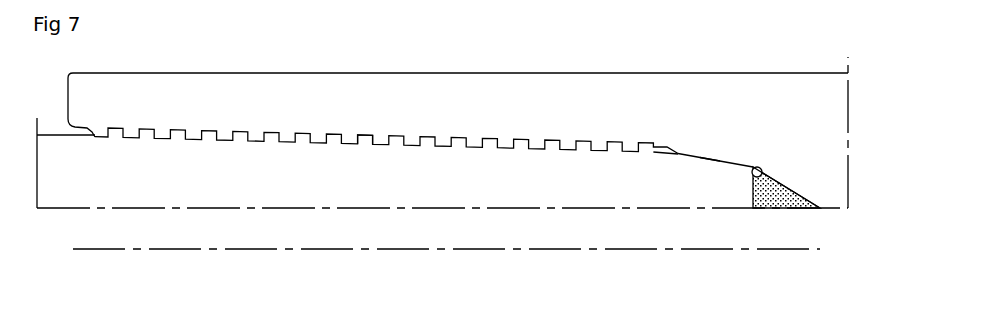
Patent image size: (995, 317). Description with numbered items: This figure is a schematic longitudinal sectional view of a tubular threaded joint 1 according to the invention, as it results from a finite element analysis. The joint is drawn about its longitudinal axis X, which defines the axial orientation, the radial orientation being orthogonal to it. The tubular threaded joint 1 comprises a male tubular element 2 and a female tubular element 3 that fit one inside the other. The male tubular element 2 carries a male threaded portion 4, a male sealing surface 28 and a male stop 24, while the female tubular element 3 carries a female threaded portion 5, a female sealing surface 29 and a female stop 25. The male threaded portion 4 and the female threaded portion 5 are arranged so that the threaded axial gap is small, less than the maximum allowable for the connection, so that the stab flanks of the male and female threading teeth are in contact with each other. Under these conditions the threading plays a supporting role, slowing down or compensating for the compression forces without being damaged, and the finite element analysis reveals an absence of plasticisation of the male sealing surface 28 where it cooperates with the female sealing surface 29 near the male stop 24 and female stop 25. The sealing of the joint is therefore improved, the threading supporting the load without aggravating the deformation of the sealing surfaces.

The tubular threaded joint 1 is at (262, 271).
The male tubular element 2 is at (250, 173).
The female tubular element 3 is at (337, 97).
The male threaded portion 4 is at (363, 141).
The female threaded portion 5 is at (442, 140).
The male stop 24 is at (760, 192).
The female stop 25 is at (783, 181).
The male sealing surface 28 is at (708, 159).
The female sealing surface 29 is at (735, 158).
The longitudinal axis X is at (790, 250).